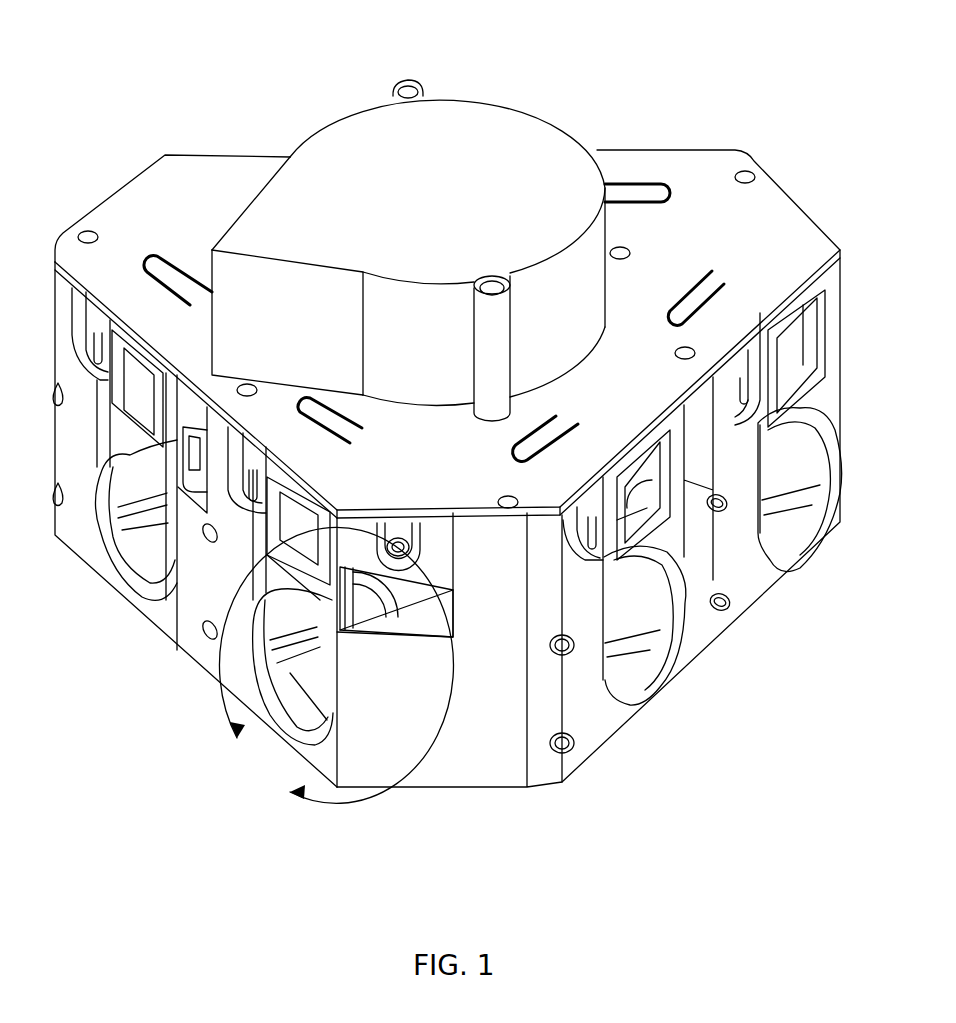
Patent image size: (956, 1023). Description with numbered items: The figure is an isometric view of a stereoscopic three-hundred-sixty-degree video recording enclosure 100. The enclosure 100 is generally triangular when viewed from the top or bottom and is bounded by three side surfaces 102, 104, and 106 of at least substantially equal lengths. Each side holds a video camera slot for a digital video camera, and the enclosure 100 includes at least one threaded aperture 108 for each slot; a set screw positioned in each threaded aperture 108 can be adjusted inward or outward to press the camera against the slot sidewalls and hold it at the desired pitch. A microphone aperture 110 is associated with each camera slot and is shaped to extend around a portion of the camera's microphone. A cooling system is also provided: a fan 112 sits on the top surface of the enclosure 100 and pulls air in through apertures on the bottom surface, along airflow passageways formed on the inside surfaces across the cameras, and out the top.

The stereoscopic 360° video recording enclosure 100 is at (190, 62).
The side surface 102 is at (633, 150).
The side surface 104 is at (98, 548).
The side surface 106 is at (600, 722).
The threaded aperture 108 is at (200, 553).
The microphone aperture 110 is at (367, 612).
The fan 112 is at (516, 104).